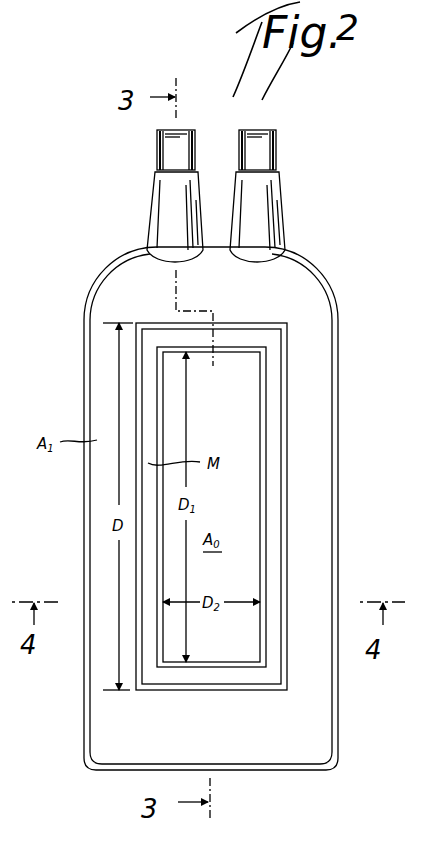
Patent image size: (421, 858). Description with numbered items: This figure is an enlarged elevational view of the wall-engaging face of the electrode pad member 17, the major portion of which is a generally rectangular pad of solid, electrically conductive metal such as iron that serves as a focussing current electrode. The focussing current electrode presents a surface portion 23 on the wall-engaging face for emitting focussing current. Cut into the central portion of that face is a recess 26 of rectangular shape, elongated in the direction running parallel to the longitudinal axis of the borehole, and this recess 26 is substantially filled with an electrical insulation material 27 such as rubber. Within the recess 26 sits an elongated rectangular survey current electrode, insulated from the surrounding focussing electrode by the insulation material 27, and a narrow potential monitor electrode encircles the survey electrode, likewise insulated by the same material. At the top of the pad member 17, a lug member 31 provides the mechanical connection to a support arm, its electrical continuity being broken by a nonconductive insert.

The electrode pad member 17 is at (80, 715).
The surface portion 23 is at (312, 560).
The recess 26 is at (287, 380).
The electrical insulation material 27 is at (230, 347).
The lug member 31 is at (258, 130).